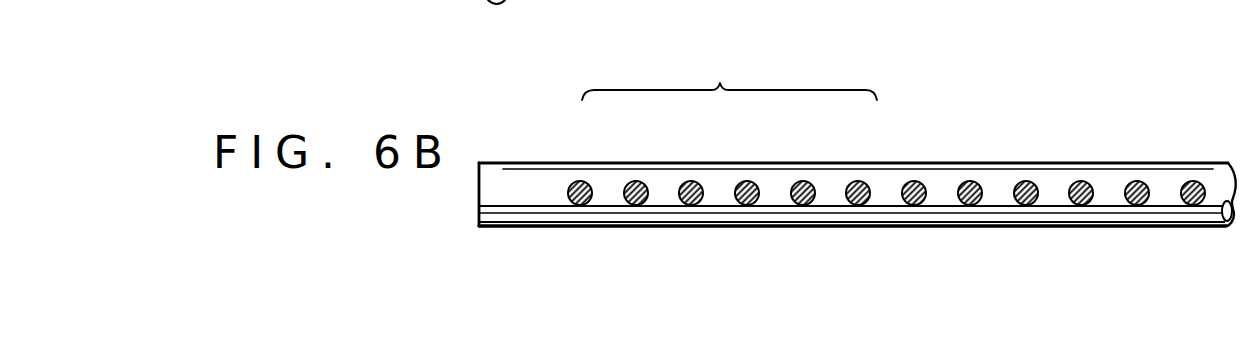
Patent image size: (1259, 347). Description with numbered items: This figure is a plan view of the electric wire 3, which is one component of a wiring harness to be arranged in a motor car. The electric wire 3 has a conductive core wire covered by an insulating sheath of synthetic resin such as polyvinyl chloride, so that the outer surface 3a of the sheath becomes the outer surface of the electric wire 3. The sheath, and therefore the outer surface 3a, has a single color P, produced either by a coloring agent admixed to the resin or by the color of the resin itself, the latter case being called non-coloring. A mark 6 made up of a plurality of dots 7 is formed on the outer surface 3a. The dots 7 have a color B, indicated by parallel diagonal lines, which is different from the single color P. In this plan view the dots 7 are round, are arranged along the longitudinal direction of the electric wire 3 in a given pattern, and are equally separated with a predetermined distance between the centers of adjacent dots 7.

The electric wire 3 is at (892, 118).
The outer surface 3a is at (520, 228).
The mark 6 is at (720, 83).
The dots 7 is at (580, 184).
The color of the dots B is at (802, 205).
The single color P is at (1213, 208).